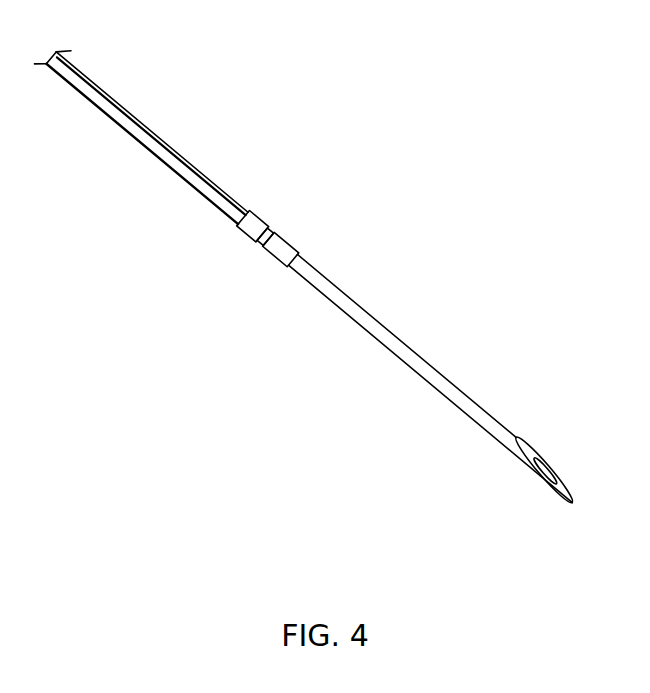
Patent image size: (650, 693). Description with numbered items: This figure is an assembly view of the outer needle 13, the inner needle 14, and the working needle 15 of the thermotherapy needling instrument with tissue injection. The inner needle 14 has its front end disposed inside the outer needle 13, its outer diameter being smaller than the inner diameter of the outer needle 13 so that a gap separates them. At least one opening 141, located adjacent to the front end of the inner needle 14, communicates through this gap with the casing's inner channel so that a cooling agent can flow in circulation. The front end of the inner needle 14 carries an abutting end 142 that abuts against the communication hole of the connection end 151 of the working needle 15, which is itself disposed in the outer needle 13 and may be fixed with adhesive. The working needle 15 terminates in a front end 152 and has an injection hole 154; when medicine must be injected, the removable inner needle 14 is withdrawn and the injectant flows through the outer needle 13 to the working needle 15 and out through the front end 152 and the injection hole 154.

The outer needle 13 is at (133, 117).
The inner needle 14 is at (103, 91).
The opening 141 is at (239, 210).
The abutting end 142 is at (271, 227).
The working needle 15 is at (392, 336).
The connection end 151 is at (294, 256).
The front end 152 is at (568, 490).
The injection hole 154 is at (540, 461).